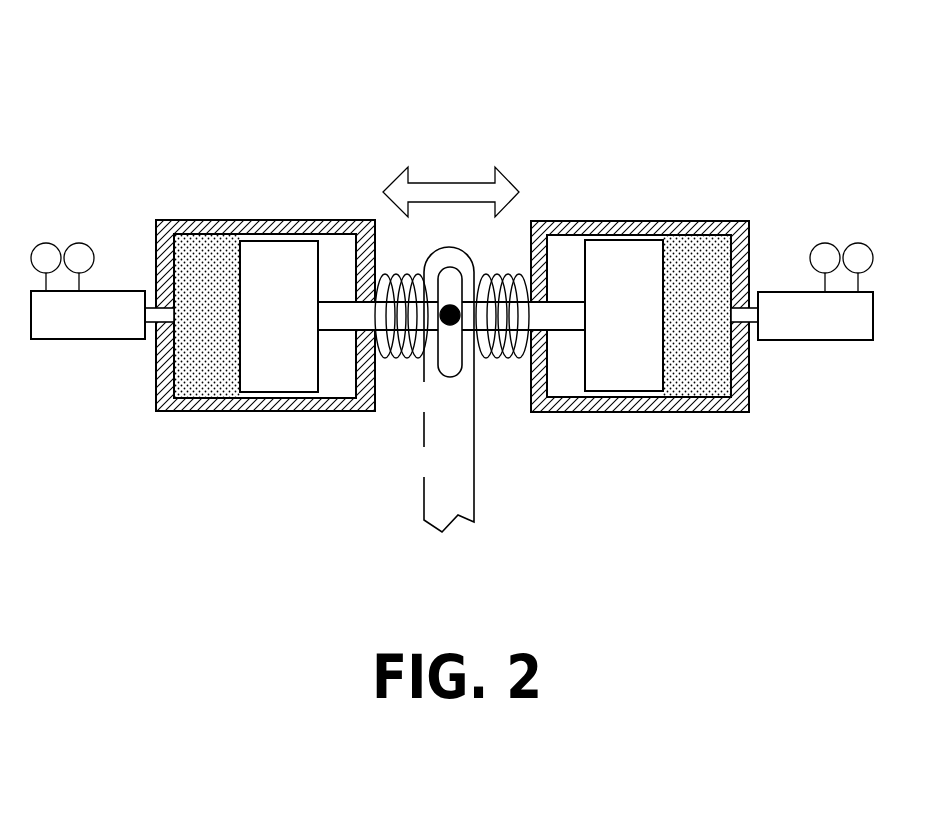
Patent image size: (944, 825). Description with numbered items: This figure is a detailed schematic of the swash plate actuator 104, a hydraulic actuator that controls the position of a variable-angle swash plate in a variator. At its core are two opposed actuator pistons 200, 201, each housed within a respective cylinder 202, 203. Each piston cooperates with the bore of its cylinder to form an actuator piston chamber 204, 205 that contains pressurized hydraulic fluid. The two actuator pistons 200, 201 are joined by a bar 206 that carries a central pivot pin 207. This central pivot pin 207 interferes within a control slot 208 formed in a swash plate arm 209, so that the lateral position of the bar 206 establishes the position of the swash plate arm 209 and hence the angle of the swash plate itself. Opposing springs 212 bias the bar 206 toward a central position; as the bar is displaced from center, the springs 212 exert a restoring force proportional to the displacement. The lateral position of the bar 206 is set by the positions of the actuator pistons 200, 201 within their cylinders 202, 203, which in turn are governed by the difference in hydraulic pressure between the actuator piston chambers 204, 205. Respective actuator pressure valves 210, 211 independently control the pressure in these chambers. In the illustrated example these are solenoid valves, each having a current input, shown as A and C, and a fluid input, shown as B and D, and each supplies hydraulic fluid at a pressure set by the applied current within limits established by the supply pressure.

The swash plate actuator 104 is at (559, 96).
The actuator piston 200 is at (295, 243).
The actuator piston 201 is at (620, 253).
The cylinder 202 is at (238, 223).
The cylinder 203 is at (692, 230).
The actuator piston chamber 204 is at (210, 380).
The actuator piston chamber 205 is at (688, 383).
The bar 206 is at (350, 308).
The central pivot pin 207 is at (450, 327).
The control slot 208 is at (452, 377).
The swash plate arm 209 is at (443, 485).
The actuator pressure valve 210 is at (90, 327).
The actuator pressure valve 211 is at (812, 325).
The springs 212 is at (497, 360).